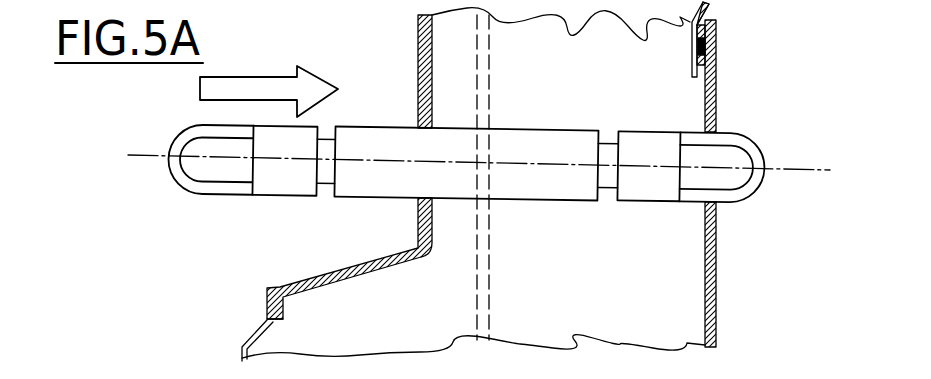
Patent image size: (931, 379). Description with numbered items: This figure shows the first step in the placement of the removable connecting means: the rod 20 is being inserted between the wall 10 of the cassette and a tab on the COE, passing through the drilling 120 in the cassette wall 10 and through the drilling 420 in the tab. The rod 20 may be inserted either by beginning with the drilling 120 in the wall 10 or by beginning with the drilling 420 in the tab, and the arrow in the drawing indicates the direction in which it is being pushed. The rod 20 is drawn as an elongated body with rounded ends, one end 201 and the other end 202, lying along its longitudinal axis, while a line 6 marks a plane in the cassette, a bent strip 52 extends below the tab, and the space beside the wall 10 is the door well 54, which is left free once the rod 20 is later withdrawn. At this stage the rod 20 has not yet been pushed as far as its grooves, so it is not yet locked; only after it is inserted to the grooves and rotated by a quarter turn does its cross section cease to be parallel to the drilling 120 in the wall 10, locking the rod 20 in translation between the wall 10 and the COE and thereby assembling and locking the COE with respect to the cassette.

The sealing plane / parting line 6 is at (480, 300).
The wall 10 is at (757, 174).
The rod 20 is at (540, 148).
The spring strip 52 is at (255, 334).
The door well 54 is at (623, 281).
The drilling 120 is at (714, 133).
The right rod end hook 201 is at (758, 183).
The left rod end hook 202 is at (175, 144).
The drilling 420 is at (418, 207).